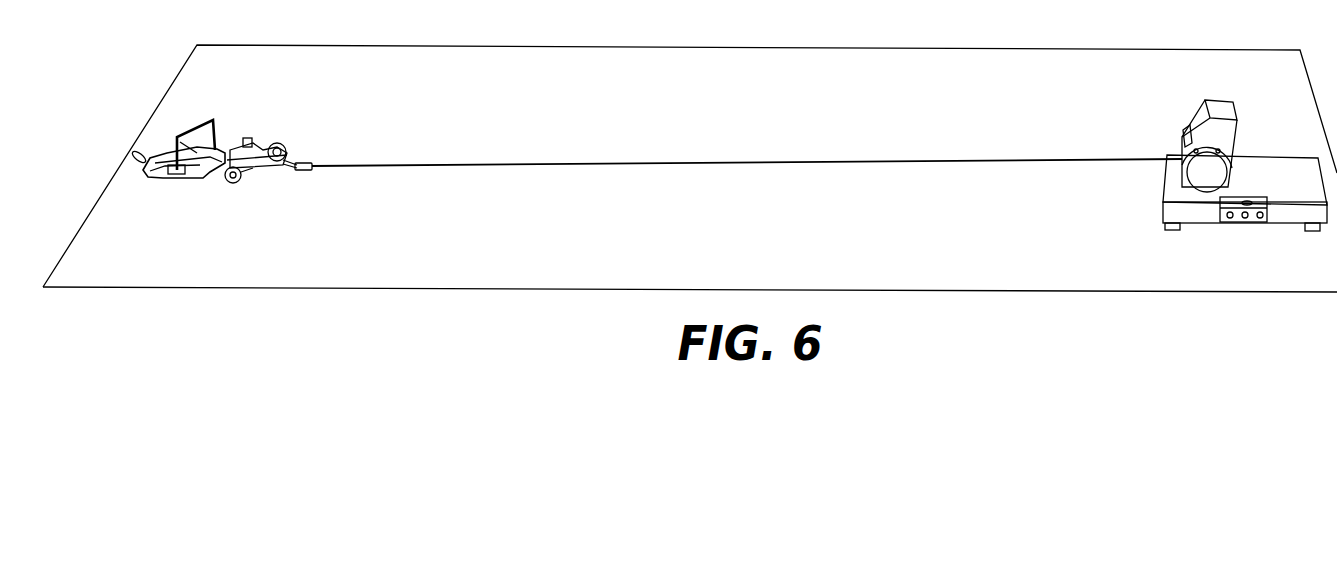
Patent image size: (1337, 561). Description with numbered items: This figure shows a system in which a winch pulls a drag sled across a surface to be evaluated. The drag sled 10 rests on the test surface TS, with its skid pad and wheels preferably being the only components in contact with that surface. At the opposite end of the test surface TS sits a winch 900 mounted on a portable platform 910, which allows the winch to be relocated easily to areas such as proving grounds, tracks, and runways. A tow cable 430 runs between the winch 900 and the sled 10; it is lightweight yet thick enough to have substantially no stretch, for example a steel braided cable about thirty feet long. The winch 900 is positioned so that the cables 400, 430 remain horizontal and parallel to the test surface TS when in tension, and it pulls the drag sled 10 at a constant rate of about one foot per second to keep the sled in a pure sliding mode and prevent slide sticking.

The drag sled 10 is at (239, 164).
The cable 400 is at (279, 178).
The tow cable 430 is at (570, 166).
The winch 900 is at (1207, 173).
The portable platform 910 is at (1245, 171).
The test surface TS is at (741, 94).